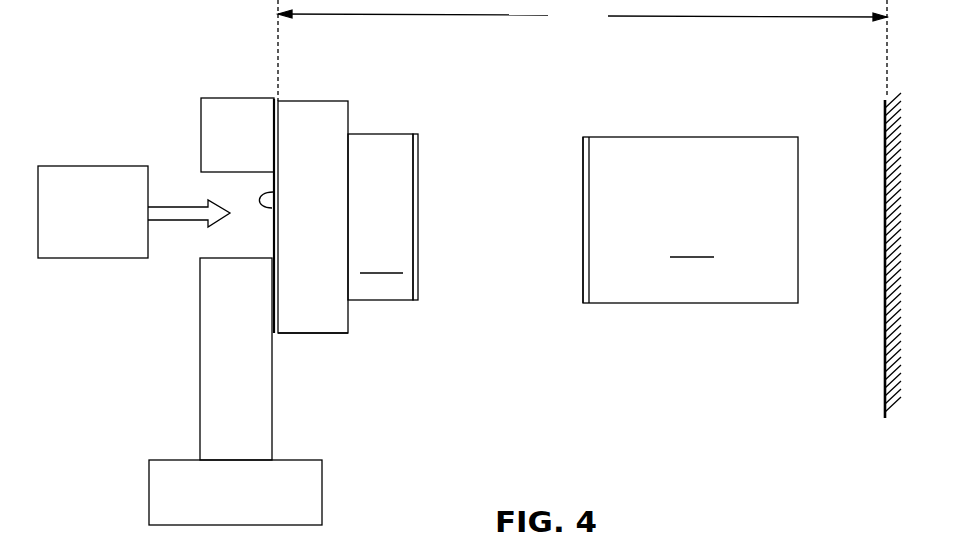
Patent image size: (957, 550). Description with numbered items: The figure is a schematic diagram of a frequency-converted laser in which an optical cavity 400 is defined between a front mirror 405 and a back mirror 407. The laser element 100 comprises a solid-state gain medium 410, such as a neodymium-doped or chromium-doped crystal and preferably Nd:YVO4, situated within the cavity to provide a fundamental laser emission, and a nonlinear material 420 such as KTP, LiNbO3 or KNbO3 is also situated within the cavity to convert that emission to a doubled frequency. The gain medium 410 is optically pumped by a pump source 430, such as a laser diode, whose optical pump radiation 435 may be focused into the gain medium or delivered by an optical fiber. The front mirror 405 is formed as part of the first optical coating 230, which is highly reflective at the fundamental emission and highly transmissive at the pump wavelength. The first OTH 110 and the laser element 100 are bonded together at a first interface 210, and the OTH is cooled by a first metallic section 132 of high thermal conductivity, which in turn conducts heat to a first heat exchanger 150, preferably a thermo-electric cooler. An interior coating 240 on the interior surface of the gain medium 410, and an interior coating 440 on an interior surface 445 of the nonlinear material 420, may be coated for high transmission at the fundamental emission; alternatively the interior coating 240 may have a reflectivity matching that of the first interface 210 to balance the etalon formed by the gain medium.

The laser element 100 is at (385, 134).
The first OTH 110 is at (310, 101).
The first metallic section 132 is at (201, 117).
The first heat exchanger 150 is at (149, 495).
The first interface 210 is at (348, 318).
The first optical coating 230 is at (275, 98).
The interior coating 240 is at (418, 173).
The optical cavity 400 is at (582, 50).
The front mirror 405 is at (273, 193).
The back mirror 407 is at (885, 400).
The solid-state gain medium 410 is at (381, 261).
The nonlinear material 420 is at (690, 220).
The pump source 430 is at (58, 259).
The optical pump radiation 435 is at (183, 222).
The interior coating 440 is at (583, 263).
The interior surface 445 is at (589, 188).